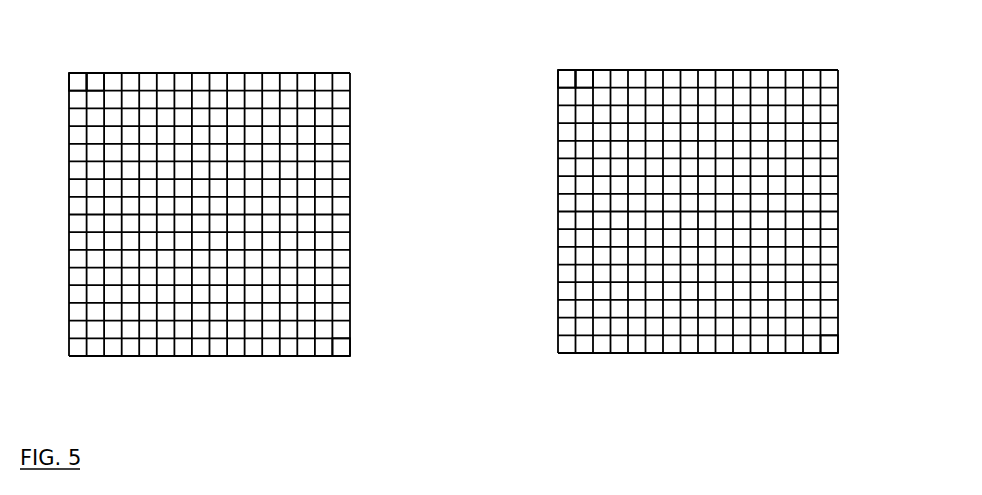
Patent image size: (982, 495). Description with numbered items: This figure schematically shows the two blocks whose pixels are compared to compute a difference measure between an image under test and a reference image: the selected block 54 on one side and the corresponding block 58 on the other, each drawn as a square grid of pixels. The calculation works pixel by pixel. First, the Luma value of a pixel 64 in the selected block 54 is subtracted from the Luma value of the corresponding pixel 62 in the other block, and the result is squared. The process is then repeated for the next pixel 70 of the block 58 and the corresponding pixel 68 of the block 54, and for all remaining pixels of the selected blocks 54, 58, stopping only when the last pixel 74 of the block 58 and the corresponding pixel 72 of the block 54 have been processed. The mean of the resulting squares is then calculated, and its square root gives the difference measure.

The selected block 54 is at (183, 370).
The corresponding block 58 is at (691, 367).
The corresponding pixel 62 is at (564, 78).
The pixel 64 is at (76, 83).
The corresponding pixel 68 is at (93, 80).
The next pixel 70 is at (582, 78).
The corresponding pixel 72 is at (341, 345).
The last pixel 74 is at (830, 345).